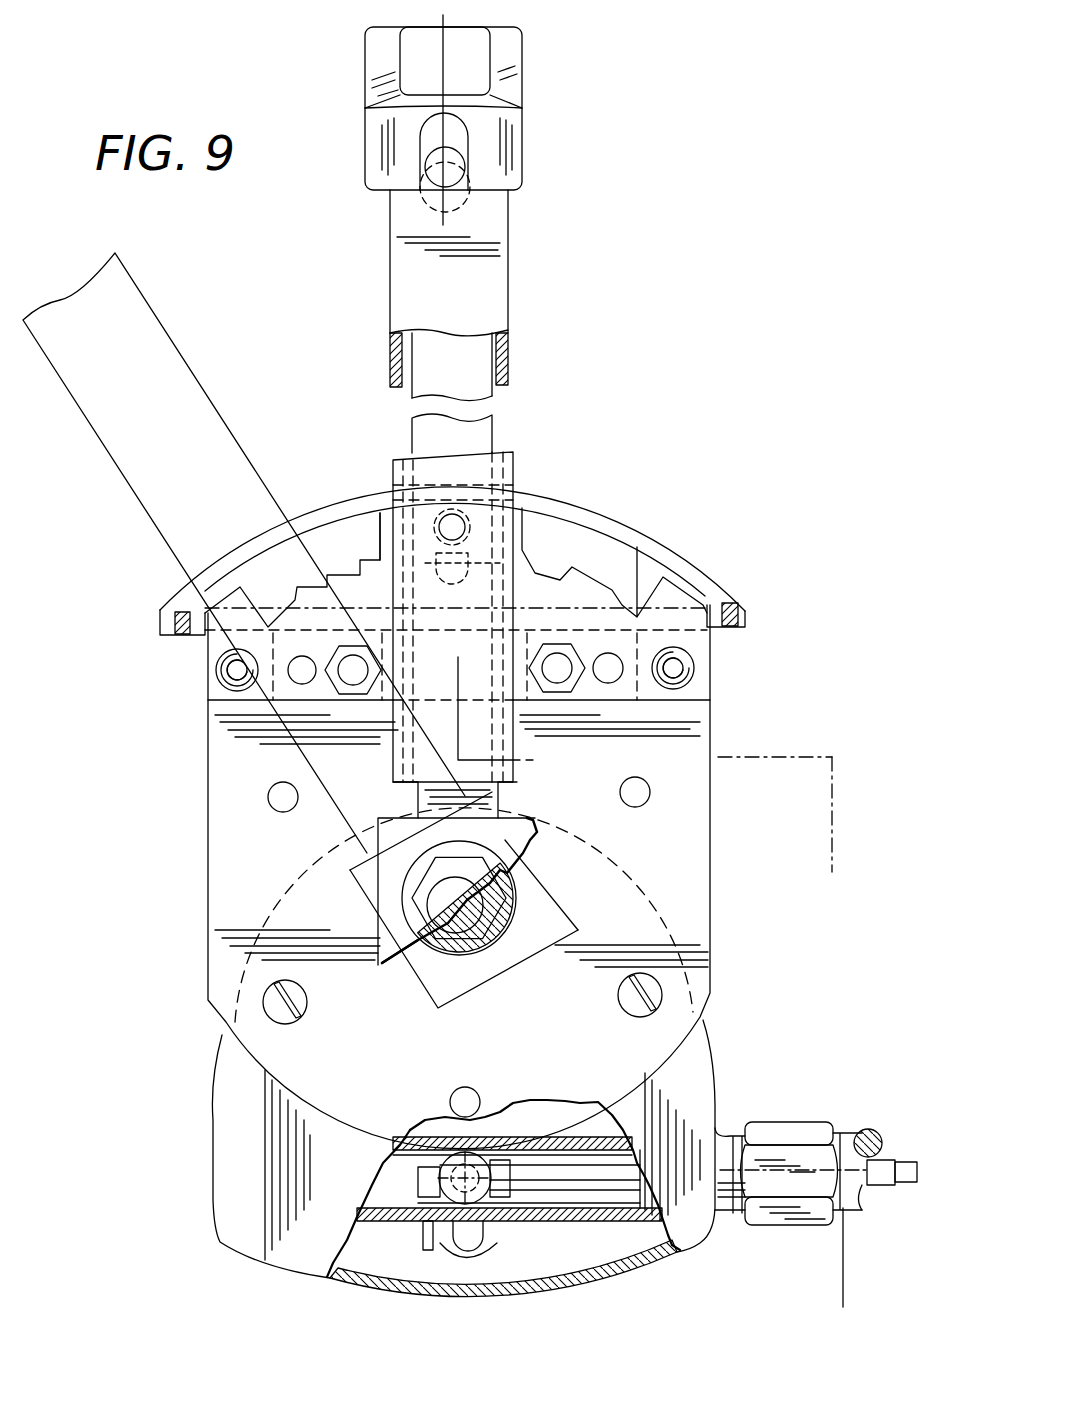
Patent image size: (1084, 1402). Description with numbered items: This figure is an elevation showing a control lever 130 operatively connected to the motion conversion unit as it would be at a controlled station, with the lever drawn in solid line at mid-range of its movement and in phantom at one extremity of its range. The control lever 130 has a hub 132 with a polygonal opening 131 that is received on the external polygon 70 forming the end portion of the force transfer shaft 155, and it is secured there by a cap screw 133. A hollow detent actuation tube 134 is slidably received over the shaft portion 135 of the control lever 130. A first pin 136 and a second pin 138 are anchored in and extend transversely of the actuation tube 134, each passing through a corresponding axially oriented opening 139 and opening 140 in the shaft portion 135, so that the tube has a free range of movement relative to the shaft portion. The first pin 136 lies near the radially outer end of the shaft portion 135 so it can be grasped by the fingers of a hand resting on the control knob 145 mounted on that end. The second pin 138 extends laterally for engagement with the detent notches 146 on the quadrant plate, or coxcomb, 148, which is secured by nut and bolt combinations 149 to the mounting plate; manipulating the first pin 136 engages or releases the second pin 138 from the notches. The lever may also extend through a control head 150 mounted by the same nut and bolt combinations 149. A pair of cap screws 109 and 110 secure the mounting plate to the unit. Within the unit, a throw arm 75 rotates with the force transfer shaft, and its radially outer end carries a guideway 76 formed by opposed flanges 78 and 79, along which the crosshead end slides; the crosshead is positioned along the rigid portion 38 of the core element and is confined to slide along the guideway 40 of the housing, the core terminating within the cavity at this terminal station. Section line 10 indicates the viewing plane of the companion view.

The section line 10 is at (447, 15).
The control knob 145 is at (515, 88).
The first pin 136 is at (455, 167).
The opening 139 is at (465, 200).
The control lever 130 is at (523, 214).
The shaft portion 135 is at (478, 433).
The detent actuation tube 134 is at (477, 468).
The quadrant plate 148 is at (380, 548).
The second pin 138 is at (457, 522).
The detent notches 146 is at (637, 615).
The opening 140 is at (497, 535).
The control head 150 is at (692, 552).
The nut and bolt combinations 149 is at (553, 650).
The force transfer shaft 155 is at (520, 868).
The external polygon 70 is at (503, 893).
The cap screw 133 is at (430, 890).
The cap screw 109 is at (305, 1002).
The polygonal opening 131 is at (498, 925).
The cap screw 110 is at (618, 997).
The hub 132 is at (457, 973).
The throw arm 75 is at (520, 1127).
The rigid portion 38 is at (558, 1170).
The guideway 40 is at (393, 1183).
The flange 78 is at (432, 1240).
The flange 79 is at (513, 1238).
The guideway 76 is at (493, 1260).